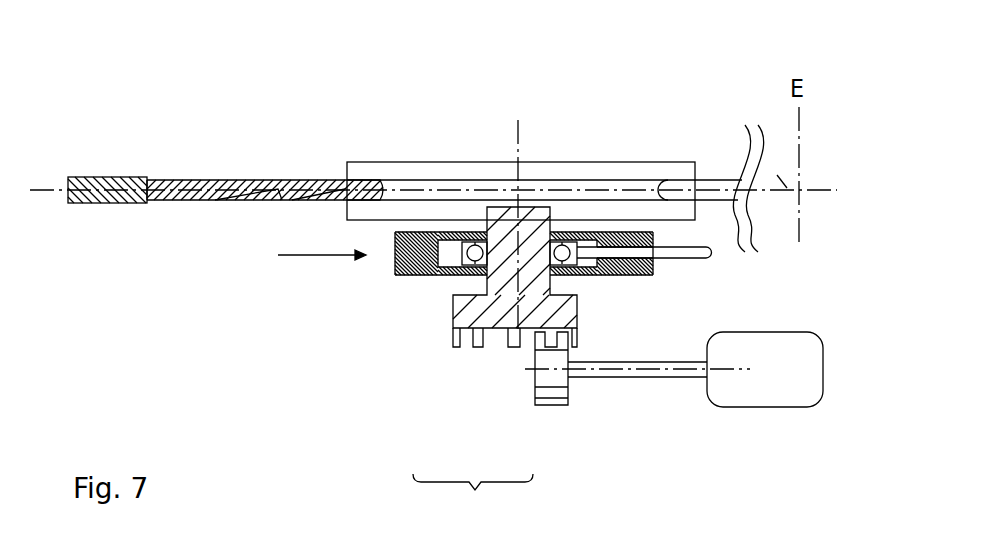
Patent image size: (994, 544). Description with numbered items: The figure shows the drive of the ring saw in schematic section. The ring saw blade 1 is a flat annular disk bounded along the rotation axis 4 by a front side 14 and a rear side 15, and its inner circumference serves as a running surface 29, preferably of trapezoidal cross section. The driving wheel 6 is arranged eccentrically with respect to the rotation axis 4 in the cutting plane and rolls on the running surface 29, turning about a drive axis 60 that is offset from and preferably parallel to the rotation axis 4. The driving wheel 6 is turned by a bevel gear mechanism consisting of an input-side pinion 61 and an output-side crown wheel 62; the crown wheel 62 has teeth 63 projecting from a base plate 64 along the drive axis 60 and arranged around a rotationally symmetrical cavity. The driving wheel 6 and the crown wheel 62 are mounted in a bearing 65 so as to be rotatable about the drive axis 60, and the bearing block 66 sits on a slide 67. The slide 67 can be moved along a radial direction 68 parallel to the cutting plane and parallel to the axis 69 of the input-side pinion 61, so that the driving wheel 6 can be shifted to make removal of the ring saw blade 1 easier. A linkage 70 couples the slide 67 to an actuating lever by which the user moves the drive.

The ring saw blade 1 is at (758, 370).
The rotation axis 4 is at (800, 172).
The driving wheel 6 is at (607, 172).
The front side 14 is at (168, 203).
The rear side 15 is at (182, 165).
The running surface 29 is at (383, 183).
The drive axis 60 is at (518, 120).
The input-side pinion 61 is at (553, 392).
The output-side crown wheel 62 is at (473, 498).
The teeth 63 is at (453, 330).
The base plate 64 is at (485, 313).
The bearing 65 is at (473, 263).
The bearing block 66 is at (463, 261).
The slide 67 is at (445, 261).
The radial direction 68 is at (328, 256).
The axis of the input-side pinion 69 is at (648, 372).
The linkage 70 is at (612, 256).